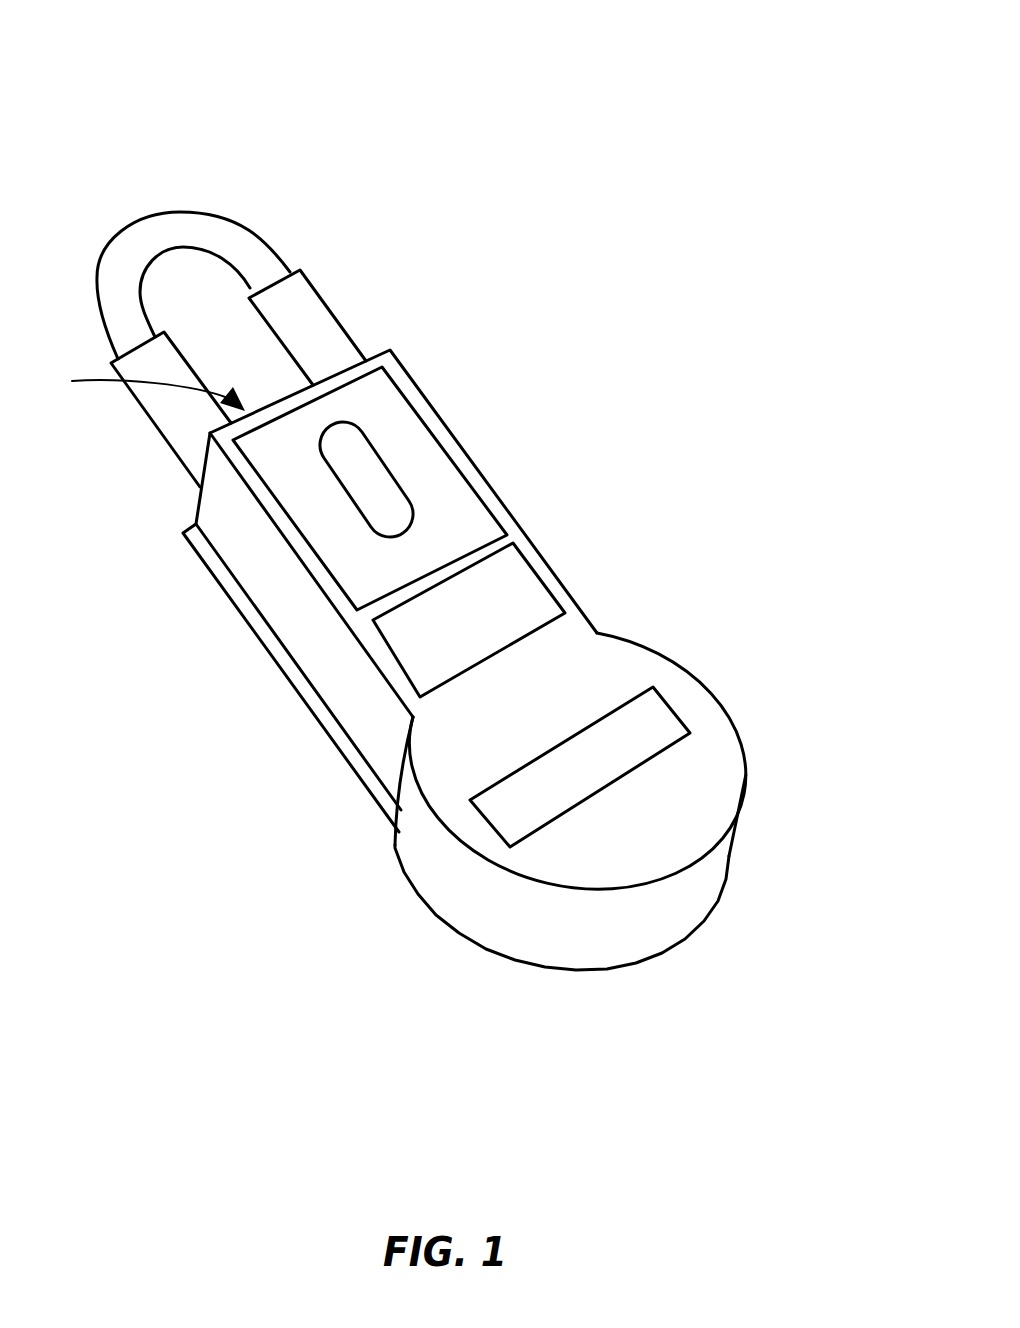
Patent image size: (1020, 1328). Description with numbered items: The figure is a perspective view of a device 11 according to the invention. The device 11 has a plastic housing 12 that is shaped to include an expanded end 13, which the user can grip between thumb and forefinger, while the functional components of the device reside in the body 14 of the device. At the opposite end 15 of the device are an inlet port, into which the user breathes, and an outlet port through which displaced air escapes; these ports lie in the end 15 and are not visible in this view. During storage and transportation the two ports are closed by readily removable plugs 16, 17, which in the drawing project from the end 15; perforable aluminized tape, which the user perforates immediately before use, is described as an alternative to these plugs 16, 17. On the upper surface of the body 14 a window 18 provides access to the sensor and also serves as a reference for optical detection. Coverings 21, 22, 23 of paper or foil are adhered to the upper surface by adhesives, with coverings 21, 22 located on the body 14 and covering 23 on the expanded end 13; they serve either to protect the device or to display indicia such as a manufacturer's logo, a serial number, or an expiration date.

The device 11 is at (533, 57).
The plastic housing 12 is at (378, 728).
The expanded end 13 is at (672, 561).
The body 14 is at (478, 286).
The end 15 is at (137, 388).
The plug 16 is at (157, 427).
The plug 17 is at (318, 292).
The window 18 is at (366, 472).
The covering 21 is at (324, 540).
The covering 22 is at (403, 655).
The covering 23 is at (500, 821).